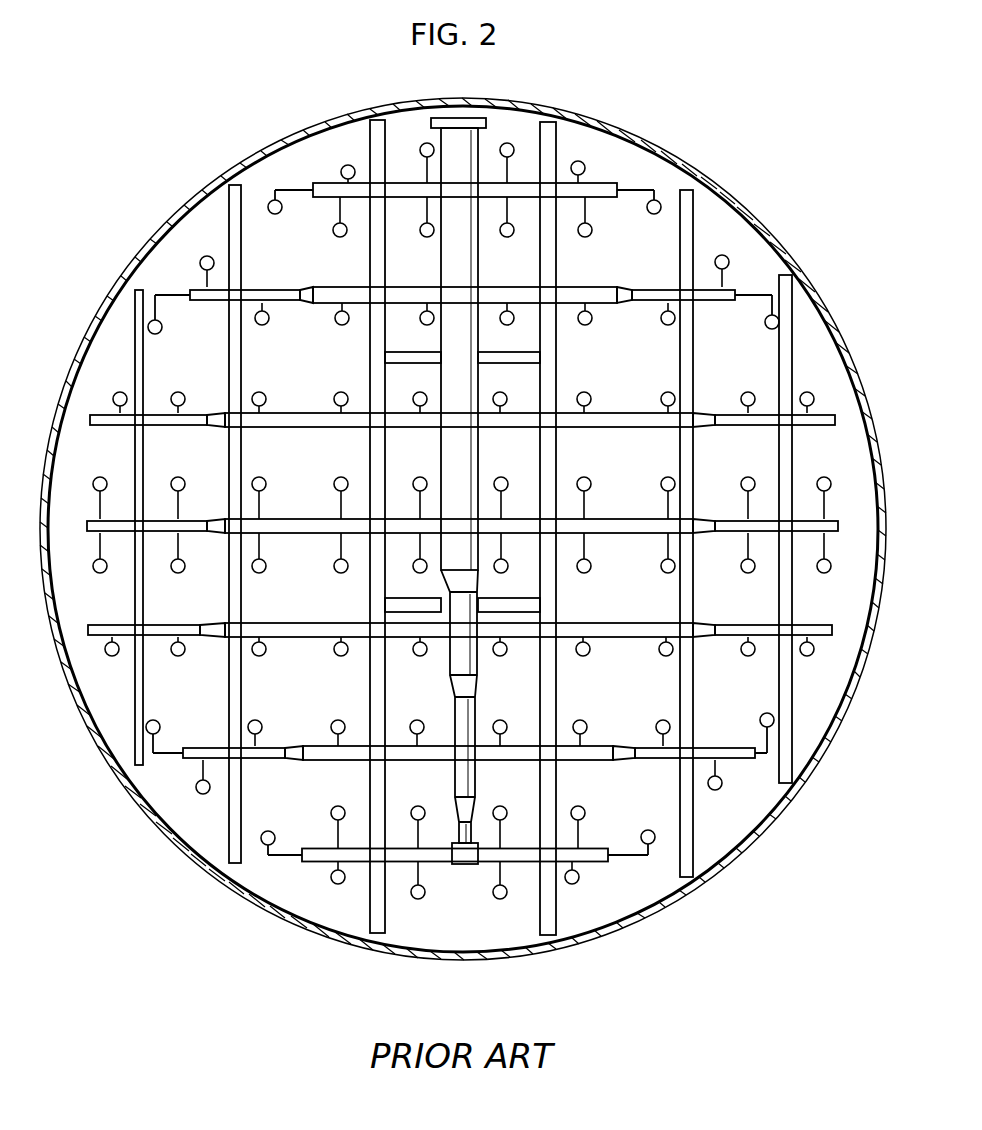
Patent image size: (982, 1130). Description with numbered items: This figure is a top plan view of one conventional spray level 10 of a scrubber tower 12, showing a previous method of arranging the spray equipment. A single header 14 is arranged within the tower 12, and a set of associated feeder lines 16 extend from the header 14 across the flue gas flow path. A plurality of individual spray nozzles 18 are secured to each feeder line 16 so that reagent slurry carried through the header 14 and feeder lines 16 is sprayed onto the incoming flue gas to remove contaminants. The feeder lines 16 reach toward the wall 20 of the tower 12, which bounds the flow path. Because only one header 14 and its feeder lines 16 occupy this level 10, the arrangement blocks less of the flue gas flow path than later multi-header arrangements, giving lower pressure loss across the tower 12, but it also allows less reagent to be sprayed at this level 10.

The spray level 10 is at (728, 893).
The scrubber tower 12 is at (818, 764).
The header 14 is at (486, 130).
The feeder line 16 is at (313, 183).
The spray nozzle 18 is at (279, 215).
The wall 20 is at (130, 265).